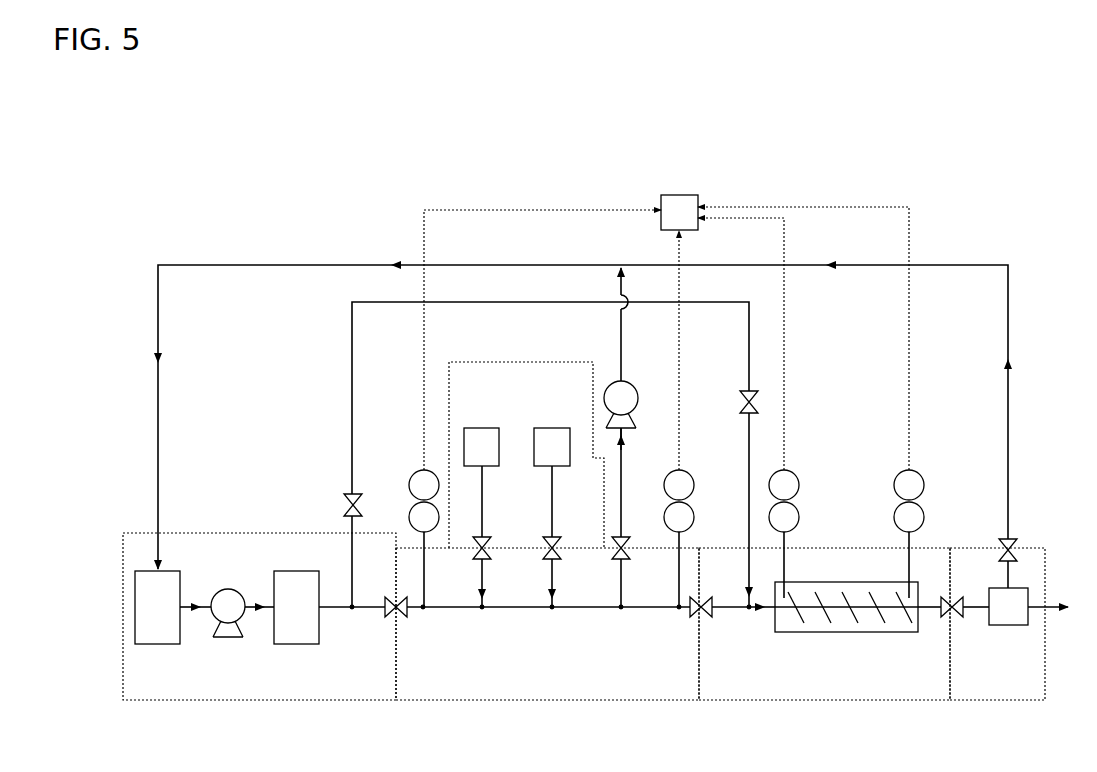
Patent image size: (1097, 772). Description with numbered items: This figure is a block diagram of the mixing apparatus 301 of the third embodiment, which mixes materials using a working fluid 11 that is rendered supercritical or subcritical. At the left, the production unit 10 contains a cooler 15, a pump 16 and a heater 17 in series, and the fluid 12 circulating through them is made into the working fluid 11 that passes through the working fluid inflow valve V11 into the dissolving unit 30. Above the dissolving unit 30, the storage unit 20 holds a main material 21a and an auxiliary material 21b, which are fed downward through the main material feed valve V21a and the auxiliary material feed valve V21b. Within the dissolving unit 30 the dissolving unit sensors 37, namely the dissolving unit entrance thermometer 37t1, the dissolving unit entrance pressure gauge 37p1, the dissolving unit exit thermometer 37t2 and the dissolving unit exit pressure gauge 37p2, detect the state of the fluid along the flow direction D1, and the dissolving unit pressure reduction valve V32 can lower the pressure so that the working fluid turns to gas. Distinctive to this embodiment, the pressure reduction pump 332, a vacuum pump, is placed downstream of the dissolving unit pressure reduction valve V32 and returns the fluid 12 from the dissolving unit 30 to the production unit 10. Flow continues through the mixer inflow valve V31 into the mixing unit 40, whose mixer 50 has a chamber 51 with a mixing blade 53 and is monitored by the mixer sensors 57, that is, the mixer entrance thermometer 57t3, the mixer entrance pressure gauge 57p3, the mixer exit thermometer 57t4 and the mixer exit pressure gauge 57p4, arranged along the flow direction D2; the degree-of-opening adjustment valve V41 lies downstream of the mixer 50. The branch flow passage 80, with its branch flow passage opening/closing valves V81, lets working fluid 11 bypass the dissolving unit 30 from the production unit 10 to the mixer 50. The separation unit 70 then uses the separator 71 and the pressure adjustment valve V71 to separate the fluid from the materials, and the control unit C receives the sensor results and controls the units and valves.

The mixing apparatus 301 is at (181, 170).
The production unit 10 is at (240, 700).
The dissolving unit 30 is at (551, 700).
The mixing unit 40 is at (826, 700).
The separation unit 70 is at (997, 700).
The storage unit 20 is at (528, 362).
The fluid 12 is at (163, 520).
The cooler 15 is at (170, 571).
The pump 16 is at (231, 590).
The heater 17 is at (300, 571).
The working fluid 11 is at (333, 610).
The working fluid inflow valve V11 is at (405, 615).
The mixer inflow valve V31 is at (710, 614).
The degree-of-opening adjustment valve V41 is at (961, 615).
The branch flow passage 80 is at (712, 302).
The branch flow passage opening/closing valve V81 is at (348, 497).
The dissolving unit sensors 37 is at (552, 408).
The dissolving unit entrance thermometer 37t1 is at (411, 479).
The dissolving unit entrance pressure gauge 37p1 is at (411, 511).
The dissolving unit exit thermometer 37t2 is at (692, 479).
The dissolving unit exit pressure gauge 37p2 is at (692, 511).
The mixer sensors 57 is at (834, 402).
The mixer entrance thermometer 57t3 is at (797, 479).
The mixer entrance pressure gauge 57p3 is at (797, 511).
The mixer exit thermometer 57t4 is at (922, 479).
The mixer exit pressure gauge 57p4 is at (922, 511).
The control unit C is at (691, 195).
The pressure reduction pump 332 is at (630, 386).
The dissolving unit pressure reduction valve V32 is at (627, 538).
The main material 21a is at (483, 428).
The auxiliary material 21b is at (553, 428).
The main material feed valve V21a is at (489, 538).
The auxiliary material feed valve V21b is at (559, 538).
The mixer 50 is at (848, 622).
The chamber 51 is at (797, 633).
The mixing blade 53 is at (824, 632).
The flow direction D1 is at (518, 657).
The flow direction D2 is at (812, 673).
The separator 71 is at (1020, 588).
The pressure adjustment valve V71 is at (1014, 540).